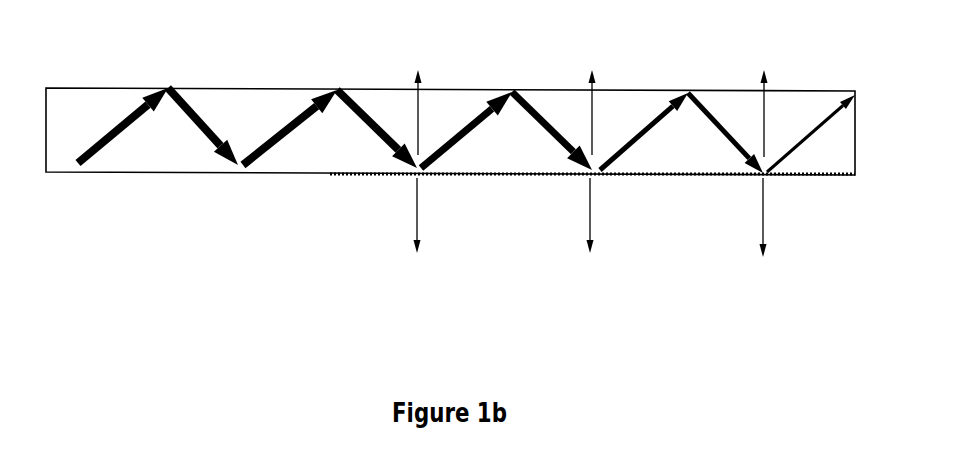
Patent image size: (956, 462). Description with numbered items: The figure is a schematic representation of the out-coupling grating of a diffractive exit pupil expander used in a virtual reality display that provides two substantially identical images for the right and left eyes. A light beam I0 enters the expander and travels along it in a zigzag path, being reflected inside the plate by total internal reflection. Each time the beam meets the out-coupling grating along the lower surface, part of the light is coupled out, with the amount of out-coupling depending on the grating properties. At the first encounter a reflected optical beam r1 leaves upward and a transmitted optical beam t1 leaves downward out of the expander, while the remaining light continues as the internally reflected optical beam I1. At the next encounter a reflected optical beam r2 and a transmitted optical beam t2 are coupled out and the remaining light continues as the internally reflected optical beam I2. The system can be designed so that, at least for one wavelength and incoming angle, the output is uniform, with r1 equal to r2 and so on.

The incident light beam I0 is at (130, 133).
The reflected optical beam inside the EPE I1 is at (460, 143).
The reflected optical beam inside the EPE I2 is at (652, 136).
The reflected optical beam out of the EPE r1 is at (417, 95).
The reflected optical beam out of the EPE r2 is at (593, 95).
The transmitted optical beam out of the EPE t1 is at (417, 237).
The transmitted optical beam out of the EPE t2 is at (595, 237).